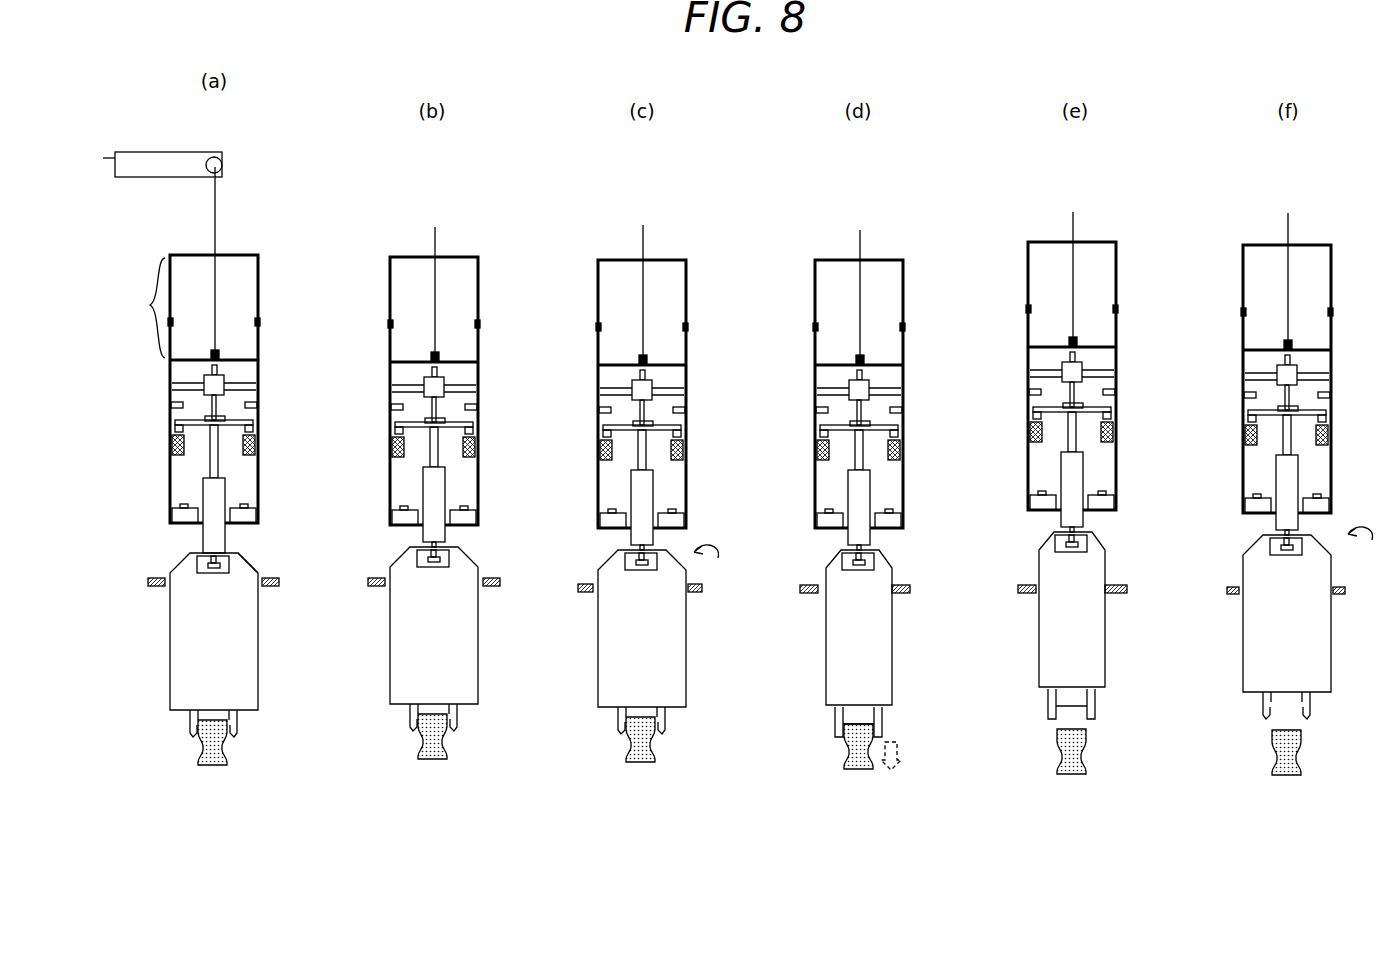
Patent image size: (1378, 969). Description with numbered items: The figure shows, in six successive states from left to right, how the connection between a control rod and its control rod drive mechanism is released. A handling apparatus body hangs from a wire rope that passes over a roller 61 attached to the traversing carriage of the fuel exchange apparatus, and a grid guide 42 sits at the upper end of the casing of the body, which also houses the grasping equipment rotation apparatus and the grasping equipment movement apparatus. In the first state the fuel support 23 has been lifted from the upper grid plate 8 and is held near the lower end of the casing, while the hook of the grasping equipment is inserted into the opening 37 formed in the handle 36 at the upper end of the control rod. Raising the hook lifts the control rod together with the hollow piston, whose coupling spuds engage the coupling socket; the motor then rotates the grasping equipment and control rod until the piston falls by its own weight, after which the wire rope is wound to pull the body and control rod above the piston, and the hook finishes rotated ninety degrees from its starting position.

The upper grid plate 8 is at (152, 586).
The fuel support 23 is at (187, 520).
The handle 36 is at (246, 562).
The opening 37 is at (198, 562).
The grid guide 42 is at (150, 305).
The roller 61 is at (212, 158).